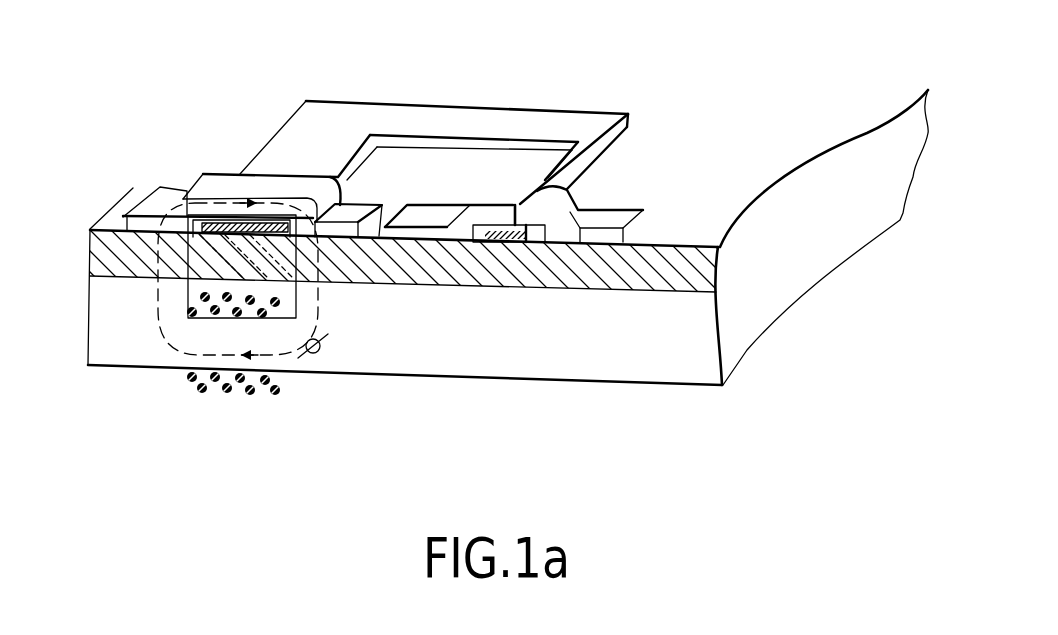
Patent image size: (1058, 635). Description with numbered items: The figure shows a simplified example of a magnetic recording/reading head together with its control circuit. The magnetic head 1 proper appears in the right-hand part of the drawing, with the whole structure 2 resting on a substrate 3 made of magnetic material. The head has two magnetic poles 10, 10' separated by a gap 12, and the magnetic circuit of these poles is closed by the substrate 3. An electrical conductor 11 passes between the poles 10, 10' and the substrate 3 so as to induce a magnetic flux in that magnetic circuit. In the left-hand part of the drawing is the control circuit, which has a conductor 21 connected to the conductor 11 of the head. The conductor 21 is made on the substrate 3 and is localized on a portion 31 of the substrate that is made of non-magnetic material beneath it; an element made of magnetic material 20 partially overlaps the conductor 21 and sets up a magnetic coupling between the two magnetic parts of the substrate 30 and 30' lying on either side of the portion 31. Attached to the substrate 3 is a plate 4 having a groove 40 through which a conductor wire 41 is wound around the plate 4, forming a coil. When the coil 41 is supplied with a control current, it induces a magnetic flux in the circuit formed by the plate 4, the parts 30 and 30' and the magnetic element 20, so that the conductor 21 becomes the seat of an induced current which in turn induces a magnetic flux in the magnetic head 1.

The magnetic head 1 is at (505, 252).
The lead frame plate 2 is at (219, 156).
The substrate 3 is at (693, 272).
The plate 4 is at (692, 365).
The magnetic pole 10 is at (414, 192).
The magnetic pole 10' is at (515, 287).
The electrical conductor 11 is at (560, 204).
The gap 12 is at (548, 181).
The element made of magnetic material 20 is at (220, 183).
The conductor 21 is at (180, 190).
The part of the substrate 30 is at (167, 266).
The part of the substrate 30' is at (343, 329).
The portion of the substrate 31 is at (113, 218).
The groove 40 is at (190, 278).
The conductor wire 41 is at (188, 304).